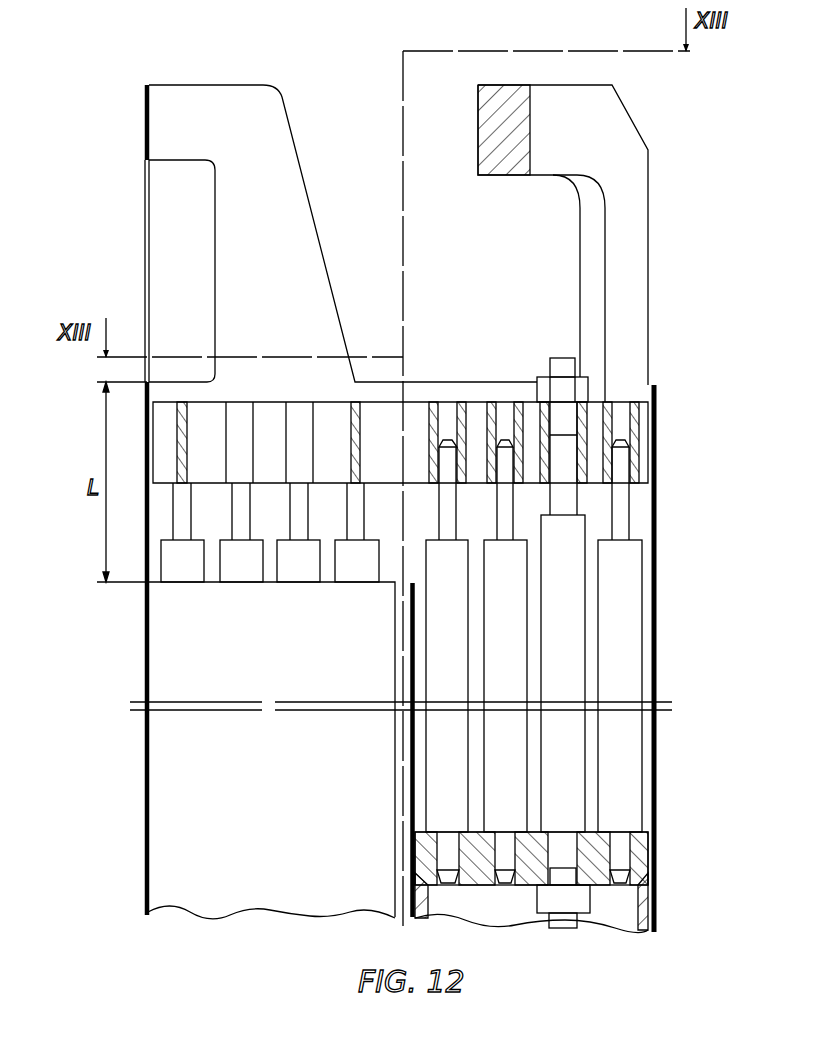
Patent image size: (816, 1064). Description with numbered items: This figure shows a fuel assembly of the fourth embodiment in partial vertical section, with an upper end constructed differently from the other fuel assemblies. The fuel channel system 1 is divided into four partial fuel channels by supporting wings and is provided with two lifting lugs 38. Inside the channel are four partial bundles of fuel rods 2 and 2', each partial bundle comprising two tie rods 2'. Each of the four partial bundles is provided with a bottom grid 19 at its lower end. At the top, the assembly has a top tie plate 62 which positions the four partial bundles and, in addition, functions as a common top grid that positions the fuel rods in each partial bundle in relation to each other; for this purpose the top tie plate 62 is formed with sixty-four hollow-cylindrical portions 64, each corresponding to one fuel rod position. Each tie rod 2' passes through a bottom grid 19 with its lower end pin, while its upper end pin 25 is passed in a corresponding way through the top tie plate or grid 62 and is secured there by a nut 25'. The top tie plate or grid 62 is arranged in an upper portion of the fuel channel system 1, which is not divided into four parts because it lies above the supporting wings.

The fuel channel system 1 is at (145, 788).
The fuel rods 2 is at (644, 686).
The tie rods 2' is at (616, 673).
The bottom grid 19 is at (640, 853).
The upper end pin 25 is at (626, 458).
The nut 25' is at (619, 367).
The lifting lugs 38 is at (175, 125).
The top tie plate 62 is at (205, 437).
The hollow-cylindrical portions 64 is at (617, 428).